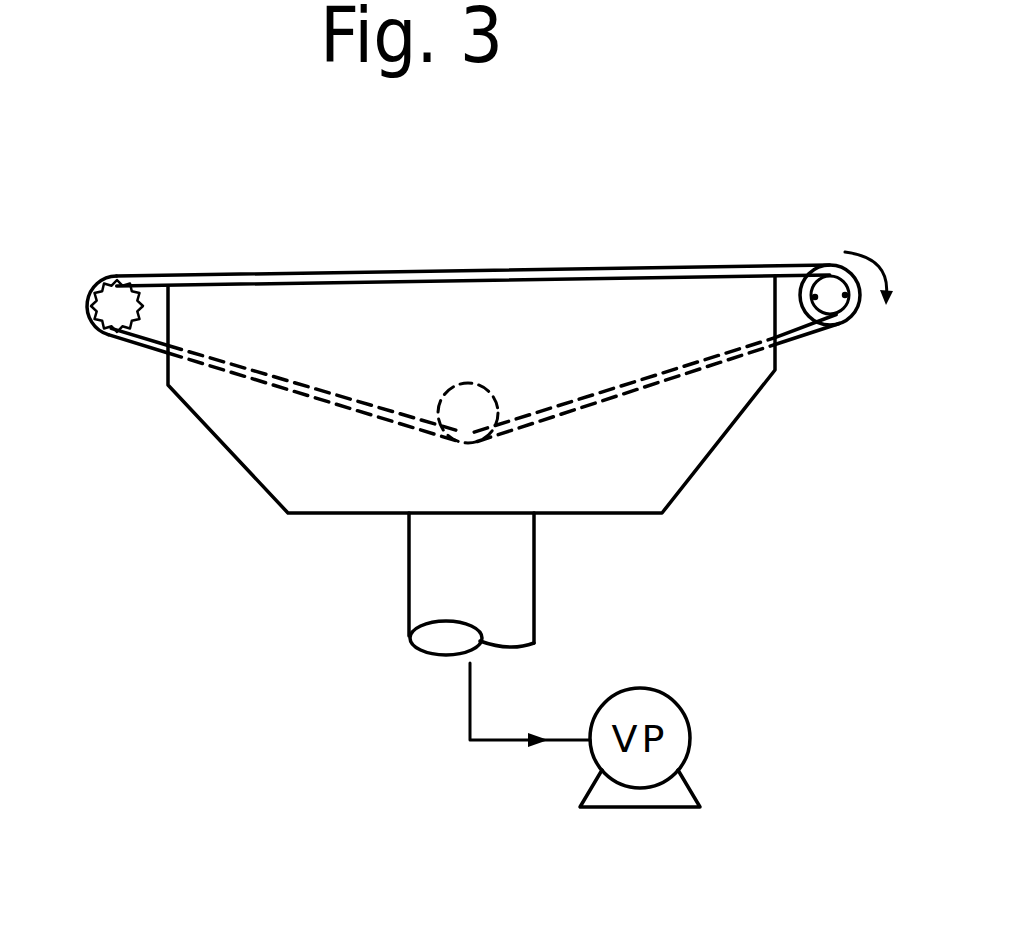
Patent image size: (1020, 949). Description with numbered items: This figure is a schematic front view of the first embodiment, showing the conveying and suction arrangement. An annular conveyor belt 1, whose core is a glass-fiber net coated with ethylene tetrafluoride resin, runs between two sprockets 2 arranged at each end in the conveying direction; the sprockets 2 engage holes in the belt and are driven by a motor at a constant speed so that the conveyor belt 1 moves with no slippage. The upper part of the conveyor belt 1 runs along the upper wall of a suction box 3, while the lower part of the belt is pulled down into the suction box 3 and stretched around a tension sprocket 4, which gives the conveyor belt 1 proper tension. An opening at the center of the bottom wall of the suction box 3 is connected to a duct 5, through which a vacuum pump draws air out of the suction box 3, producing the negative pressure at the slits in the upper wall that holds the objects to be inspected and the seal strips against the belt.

The conveyor belt 1 is at (247, 275).
The sprockets 2 is at (98, 327).
The suction box 3 is at (720, 443).
The tension sprocket 4 is at (478, 422).
The duct 5 is at (409, 570).